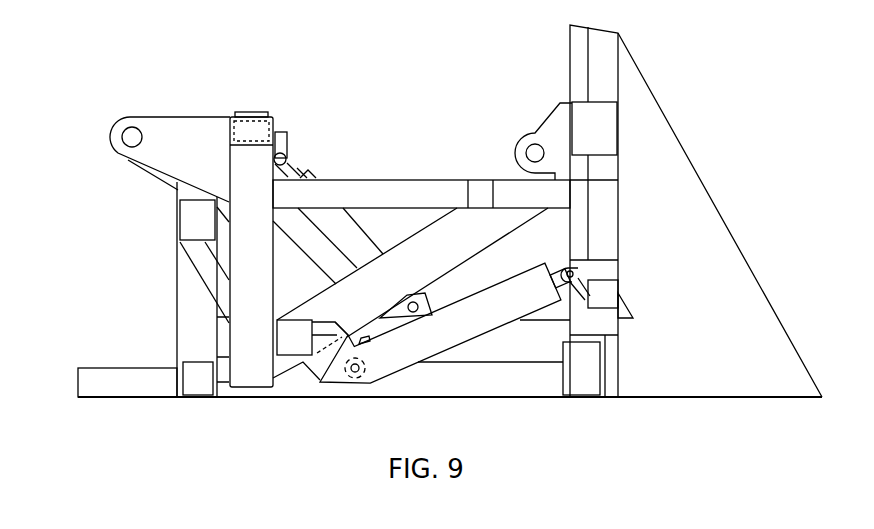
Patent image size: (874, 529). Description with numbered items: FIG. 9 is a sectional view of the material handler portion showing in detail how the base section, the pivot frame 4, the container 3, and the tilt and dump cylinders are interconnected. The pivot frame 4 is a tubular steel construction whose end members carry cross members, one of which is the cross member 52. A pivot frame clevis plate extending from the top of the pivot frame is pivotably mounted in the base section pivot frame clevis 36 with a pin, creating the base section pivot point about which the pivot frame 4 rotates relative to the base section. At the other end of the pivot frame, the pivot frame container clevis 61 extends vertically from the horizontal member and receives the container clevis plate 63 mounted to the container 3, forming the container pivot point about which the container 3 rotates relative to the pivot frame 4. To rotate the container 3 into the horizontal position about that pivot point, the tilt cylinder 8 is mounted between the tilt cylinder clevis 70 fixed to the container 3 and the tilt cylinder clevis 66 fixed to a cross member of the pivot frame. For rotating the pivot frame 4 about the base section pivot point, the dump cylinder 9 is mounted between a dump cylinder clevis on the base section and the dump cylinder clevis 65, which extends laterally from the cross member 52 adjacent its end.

The container 3 is at (688, 154).
The pivot frame 4 is at (346, 172).
The tilt cylinder 8 is at (404, 367).
The dump cylinder 9 is at (365, 228).
The base section pivot frame clevis 36 is at (168, 122).
The cross member 52 is at (232, 122).
The pivot frame container clevis 61 is at (516, 176).
The container clevis plate 63 is at (541, 124).
The dump cylinder clevis 65 is at (289, 156).
The tilt cylinder clevis 66 is at (313, 383).
The tilt cylinder clevis 70 is at (579, 283).